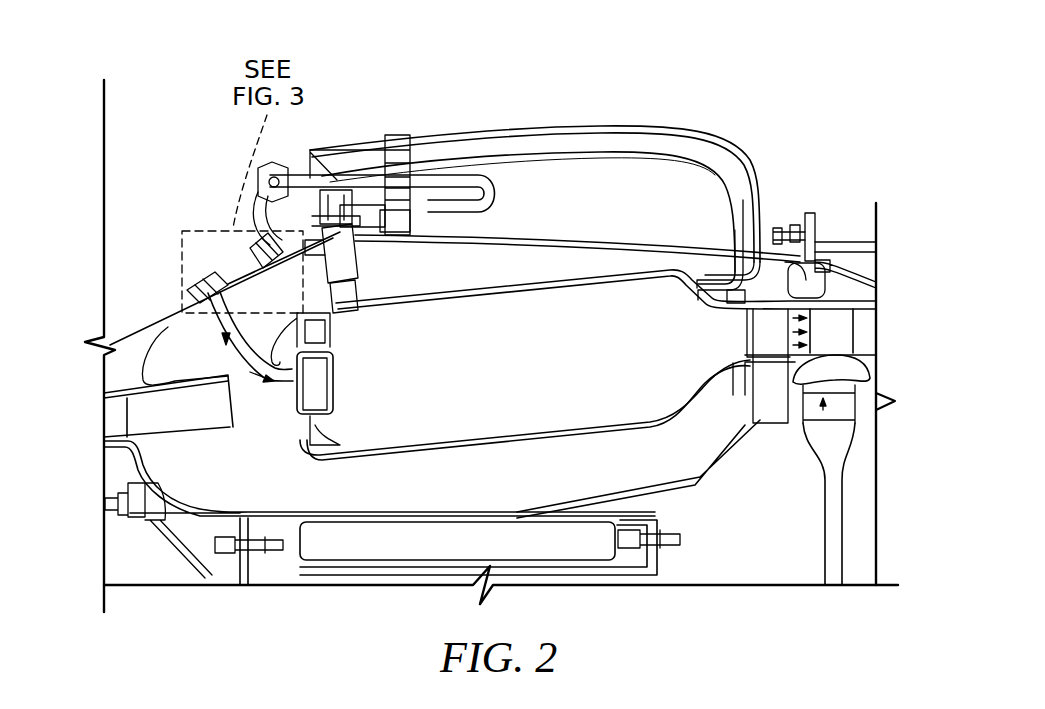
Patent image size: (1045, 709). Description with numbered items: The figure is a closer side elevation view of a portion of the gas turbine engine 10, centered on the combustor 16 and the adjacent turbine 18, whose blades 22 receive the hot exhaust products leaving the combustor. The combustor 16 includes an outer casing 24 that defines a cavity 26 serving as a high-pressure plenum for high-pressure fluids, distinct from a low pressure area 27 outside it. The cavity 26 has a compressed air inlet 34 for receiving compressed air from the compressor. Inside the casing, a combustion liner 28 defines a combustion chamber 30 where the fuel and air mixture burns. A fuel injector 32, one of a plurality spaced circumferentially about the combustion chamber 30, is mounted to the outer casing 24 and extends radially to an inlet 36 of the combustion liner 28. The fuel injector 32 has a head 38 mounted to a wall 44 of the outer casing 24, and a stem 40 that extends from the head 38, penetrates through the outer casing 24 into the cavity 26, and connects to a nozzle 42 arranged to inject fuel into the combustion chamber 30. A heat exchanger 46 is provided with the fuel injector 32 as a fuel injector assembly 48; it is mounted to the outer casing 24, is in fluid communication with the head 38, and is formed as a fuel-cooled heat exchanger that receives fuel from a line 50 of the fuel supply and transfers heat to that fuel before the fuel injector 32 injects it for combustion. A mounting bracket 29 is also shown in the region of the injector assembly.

The gas turbine engine 10 is at (862, 95).
The combustor 16 is at (613, 200).
The turbine 18 is at (845, 222).
The blades 22 is at (857, 325).
The outer casing 24 is at (555, 234).
The cavity 26 is at (453, 278).
The low pressure area 27 is at (217, 182).
The combustion liner 28 is at (625, 270).
The mounting bracket 29 is at (352, 260).
The combustion chamber 30 is at (613, 385).
The fuel injectors 32 is at (160, 245).
The compressed air inlet 34 is at (160, 408).
The inlet 36 is at (270, 410).
The head 38 is at (178, 284).
The stem 40 is at (215, 313).
The nozzle 42 is at (337, 362).
The wall 44 is at (168, 337).
The heat exchanger 46 is at (283, 245).
The fuel injector assembly 48 is at (216, 252).
The line 50 is at (290, 165).